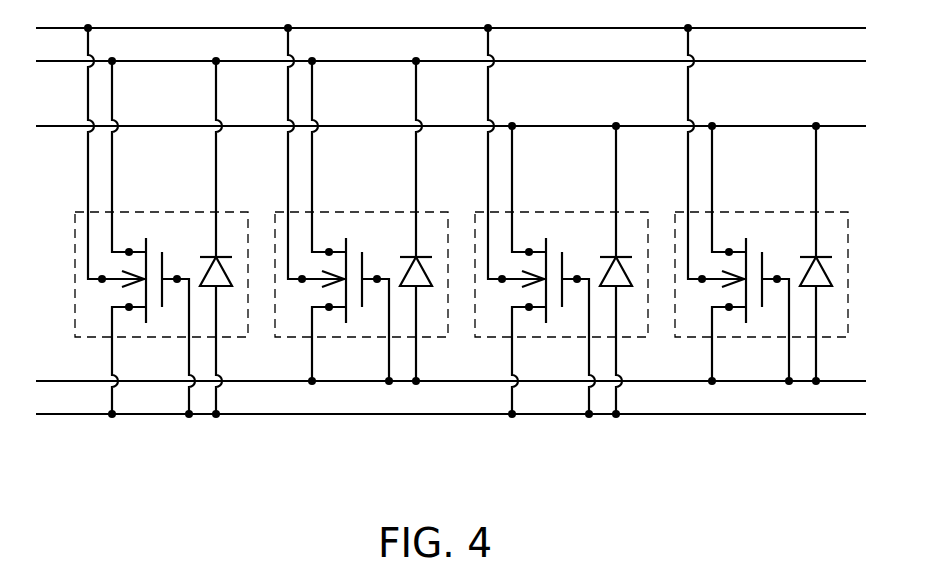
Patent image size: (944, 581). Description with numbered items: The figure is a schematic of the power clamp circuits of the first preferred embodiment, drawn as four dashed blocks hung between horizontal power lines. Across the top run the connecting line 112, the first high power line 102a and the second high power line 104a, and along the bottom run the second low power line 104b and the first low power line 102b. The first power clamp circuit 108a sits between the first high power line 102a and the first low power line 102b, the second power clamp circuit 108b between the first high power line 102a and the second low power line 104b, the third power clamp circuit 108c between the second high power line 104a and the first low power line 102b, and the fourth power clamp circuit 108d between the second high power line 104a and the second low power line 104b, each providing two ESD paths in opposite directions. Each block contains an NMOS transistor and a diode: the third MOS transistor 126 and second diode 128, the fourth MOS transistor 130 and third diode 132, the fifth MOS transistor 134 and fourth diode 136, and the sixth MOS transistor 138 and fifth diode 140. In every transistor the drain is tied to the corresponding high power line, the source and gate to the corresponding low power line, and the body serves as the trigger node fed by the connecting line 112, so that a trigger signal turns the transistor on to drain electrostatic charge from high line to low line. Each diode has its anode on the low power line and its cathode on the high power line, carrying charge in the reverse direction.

The connecting line 112 is at (834, 26).
The first high power line 102a is at (834, 64).
The second high power line 104a is at (834, 129).
The second low power line 104b is at (833, 378).
The first low power line 102b is at (833, 412).
The first power clamp circuit 108a is at (75, 228).
The second power clamp circuit 108b is at (275, 228).
The third power clamp circuit 108c is at (475, 228).
The fourth power clamp circuit 108d is at (675, 228).
The third MOS transistor 126 is at (155, 248).
The second diode 128 is at (224, 280).
The fourth MOS transistor 130 is at (355, 248).
The third diode 132 is at (424, 280).
The fifth MOS transistor 134 is at (555, 248).
The fourth diode 136 is at (624, 280).
The sixth MOS transistor 138 is at (755, 248).
The fifth diode 140 is at (813, 272).